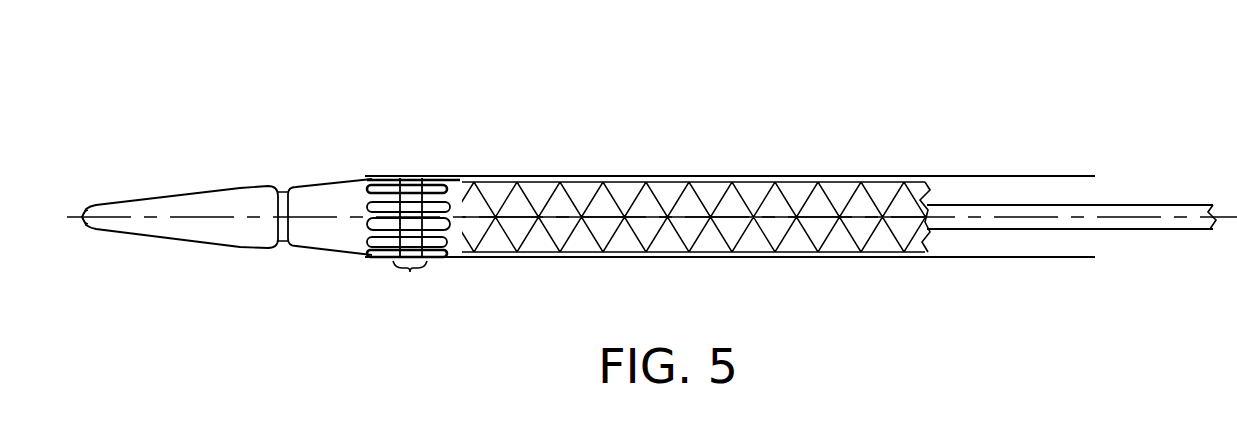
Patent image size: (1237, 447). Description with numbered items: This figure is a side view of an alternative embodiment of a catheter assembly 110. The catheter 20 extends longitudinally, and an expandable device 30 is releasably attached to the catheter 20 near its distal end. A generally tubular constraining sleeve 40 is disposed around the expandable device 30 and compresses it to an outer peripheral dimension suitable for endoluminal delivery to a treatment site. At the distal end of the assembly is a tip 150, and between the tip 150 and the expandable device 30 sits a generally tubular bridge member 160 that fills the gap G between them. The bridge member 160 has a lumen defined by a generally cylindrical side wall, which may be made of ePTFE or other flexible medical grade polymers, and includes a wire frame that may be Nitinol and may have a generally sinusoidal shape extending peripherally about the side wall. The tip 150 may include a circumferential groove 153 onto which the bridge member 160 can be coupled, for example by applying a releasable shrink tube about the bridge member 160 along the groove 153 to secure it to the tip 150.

The catheter assembly 110 is at (448, 97).
The tip 150 is at (205, 207).
The circumferential groove 153 is at (284, 189).
The bridge member 160 is at (366, 180).
The gap G is at (410, 281).
The constraining sleeve 40 is at (630, 176).
The expandable device 30 is at (737, 190).
The catheter 20 is at (1018, 205).